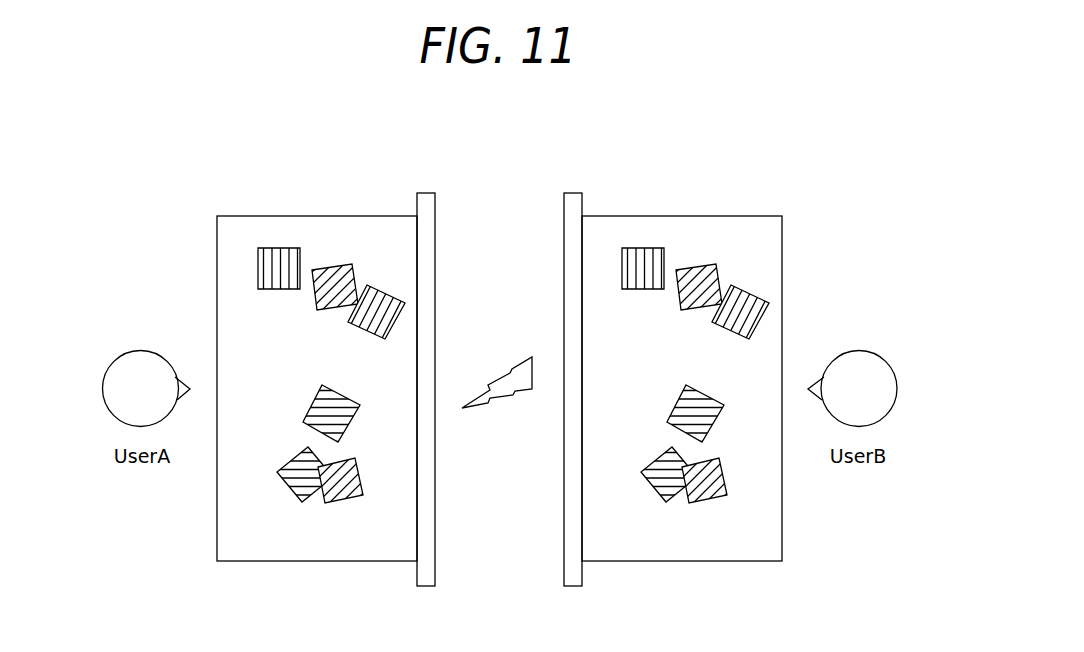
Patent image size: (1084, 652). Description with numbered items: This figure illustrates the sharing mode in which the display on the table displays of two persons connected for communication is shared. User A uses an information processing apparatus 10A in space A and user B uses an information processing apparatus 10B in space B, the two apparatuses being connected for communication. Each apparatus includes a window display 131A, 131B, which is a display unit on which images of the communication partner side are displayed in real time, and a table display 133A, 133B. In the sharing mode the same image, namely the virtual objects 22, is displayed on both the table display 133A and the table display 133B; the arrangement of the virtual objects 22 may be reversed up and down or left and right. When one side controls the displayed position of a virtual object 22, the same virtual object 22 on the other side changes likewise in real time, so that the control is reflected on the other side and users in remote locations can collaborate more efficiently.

The information processing apparatus 10A is at (336, 350).
The information processing apparatus 10B is at (667, 350).
The window display 131A is at (427, 193).
The window display 131B is at (573, 193).
The table display 133A is at (250, 216).
The table display 133B is at (758, 216).
The virtual object 22 is at (313, 514).